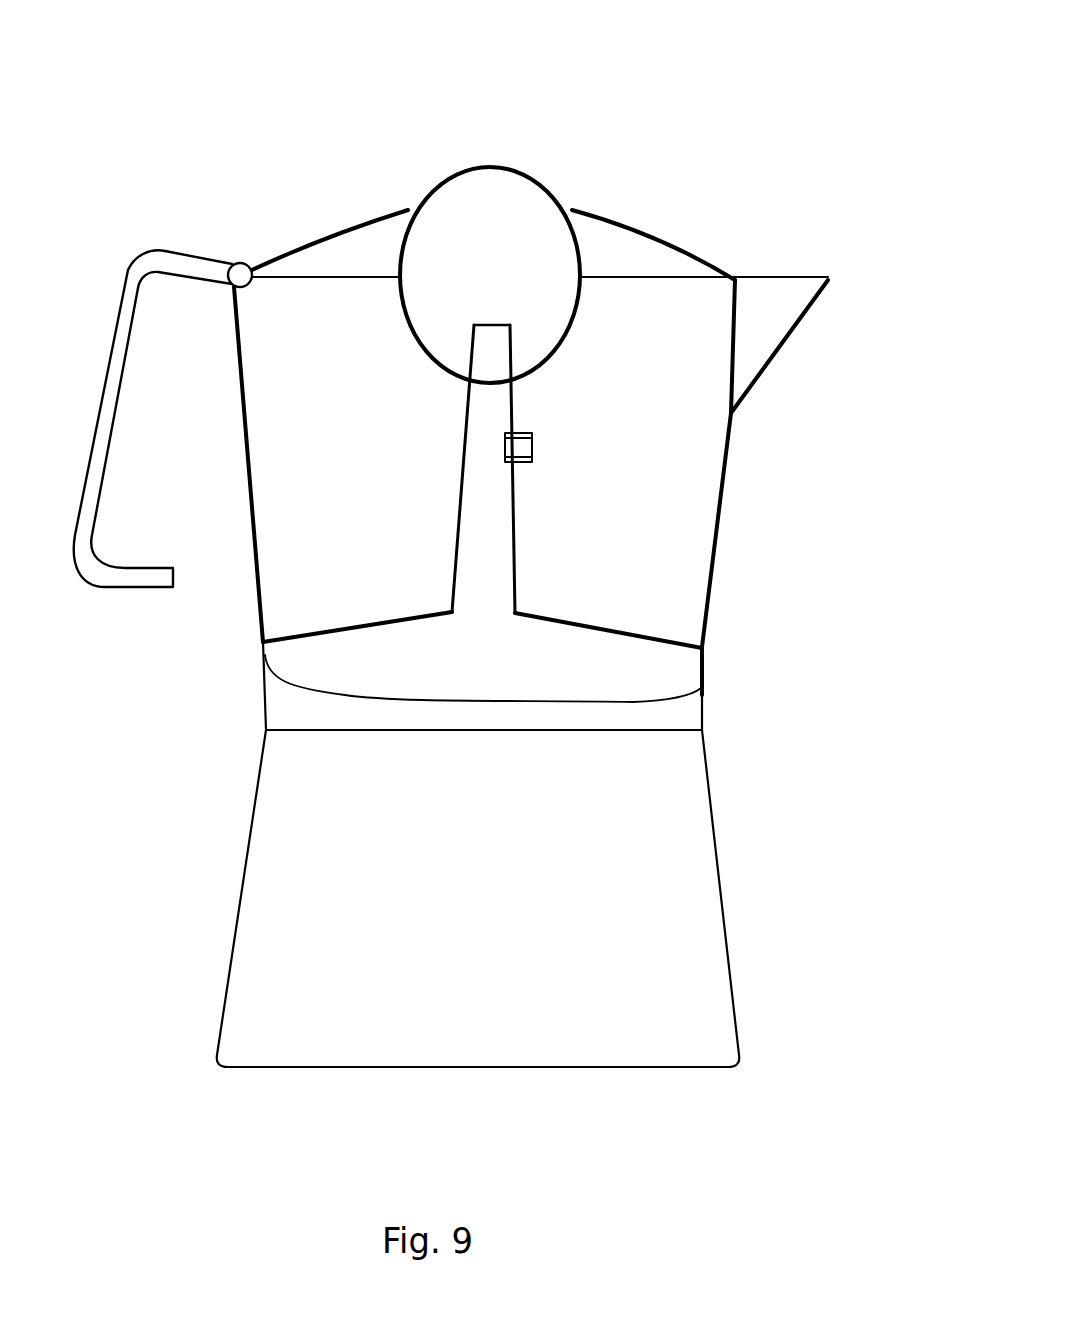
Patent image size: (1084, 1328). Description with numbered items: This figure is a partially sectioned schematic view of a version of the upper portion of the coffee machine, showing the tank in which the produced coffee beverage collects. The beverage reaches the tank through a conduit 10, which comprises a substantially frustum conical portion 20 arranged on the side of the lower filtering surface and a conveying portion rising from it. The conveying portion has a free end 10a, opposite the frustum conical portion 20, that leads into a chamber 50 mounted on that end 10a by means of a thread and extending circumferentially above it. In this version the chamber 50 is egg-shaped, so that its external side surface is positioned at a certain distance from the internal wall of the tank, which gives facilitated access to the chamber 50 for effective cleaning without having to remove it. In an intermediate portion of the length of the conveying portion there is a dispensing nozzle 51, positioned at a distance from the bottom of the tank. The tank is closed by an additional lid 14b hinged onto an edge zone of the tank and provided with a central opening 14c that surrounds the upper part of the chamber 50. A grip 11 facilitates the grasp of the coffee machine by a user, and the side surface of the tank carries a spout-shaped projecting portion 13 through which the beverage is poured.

The conduit 10 is at (487, 584).
The free end of the conveying portion 10a is at (498, 325).
The grip 11 is at (125, 274).
The projecting portion 13 is at (794, 299).
The additional lid 14b is at (681, 247).
The central opening 14c is at (407, 210).
The frustum conical portion 20 is at (602, 632).
The chamber 50 is at (396, 194).
The dispensing nozzle 51 is at (546, 445).